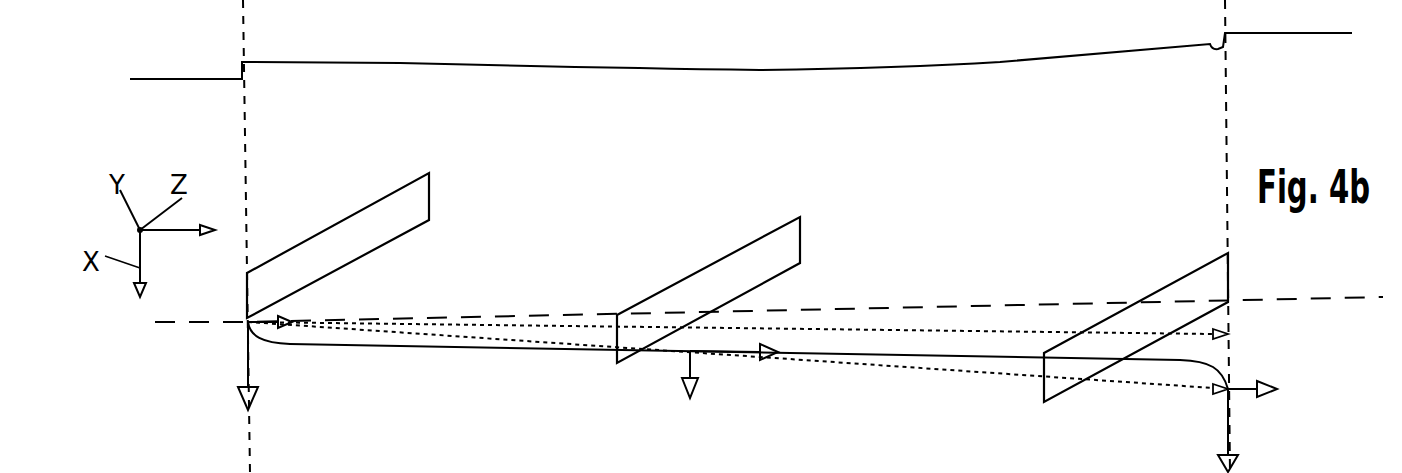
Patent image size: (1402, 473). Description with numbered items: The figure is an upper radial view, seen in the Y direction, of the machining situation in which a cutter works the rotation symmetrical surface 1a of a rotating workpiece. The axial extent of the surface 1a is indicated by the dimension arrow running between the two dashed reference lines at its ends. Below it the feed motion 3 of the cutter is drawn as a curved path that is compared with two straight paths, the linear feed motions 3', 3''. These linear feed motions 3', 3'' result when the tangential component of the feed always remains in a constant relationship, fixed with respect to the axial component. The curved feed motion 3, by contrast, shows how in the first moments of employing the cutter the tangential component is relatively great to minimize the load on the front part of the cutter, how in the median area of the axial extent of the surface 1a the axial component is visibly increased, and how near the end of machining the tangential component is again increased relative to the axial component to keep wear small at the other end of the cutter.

The rotation symmetrical surface 1a is at (243, 128).
The feed motion 3 is at (738, 364).
The linear feed motion 3' is at (738, 286).
The linear feed motion 3'' is at (738, 314).